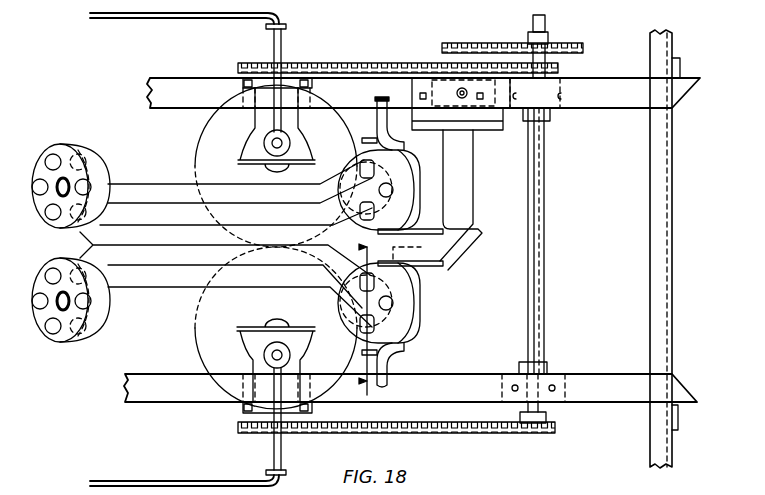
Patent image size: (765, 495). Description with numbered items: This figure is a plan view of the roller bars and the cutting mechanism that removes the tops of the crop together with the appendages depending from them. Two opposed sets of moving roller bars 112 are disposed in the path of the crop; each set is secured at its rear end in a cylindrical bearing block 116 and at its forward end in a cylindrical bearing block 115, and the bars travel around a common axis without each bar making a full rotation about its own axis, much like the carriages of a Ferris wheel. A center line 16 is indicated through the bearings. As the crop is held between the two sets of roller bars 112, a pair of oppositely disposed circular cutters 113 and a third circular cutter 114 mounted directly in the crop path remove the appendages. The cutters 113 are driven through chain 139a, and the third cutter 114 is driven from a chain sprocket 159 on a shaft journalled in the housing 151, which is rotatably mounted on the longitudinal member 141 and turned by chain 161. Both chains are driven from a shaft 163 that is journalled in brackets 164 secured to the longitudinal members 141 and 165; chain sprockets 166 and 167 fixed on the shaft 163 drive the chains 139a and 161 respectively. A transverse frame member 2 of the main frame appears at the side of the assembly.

The transverse frame member 2 is at (672, 250).
The center line of shafts 16 is at (355, 316).
The roller bars 112 is at (166, 184).
The circular cutters 113 is at (206, 129).
The third circular cutter 114 is at (461, 250).
The cylindrical bearing blocks 115 is at (80, 142).
The cylindrical bearing blocks 116 is at (412, 172).
The chain 139a is at (345, 64).
The longitudinal member 141 is at (594, 87).
The housing 151 is at (458, 201).
The chain sprocket 159 is at (454, 60).
The chain 161 is at (503, 43).
The shaft 163 is at (544, 200).
The brackets 164 is at (552, 116).
The longitudinal member 165 is at (480, 369).
The chain sprocket 166 is at (558, 60).
The chain sprocket 167 is at (545, 37).